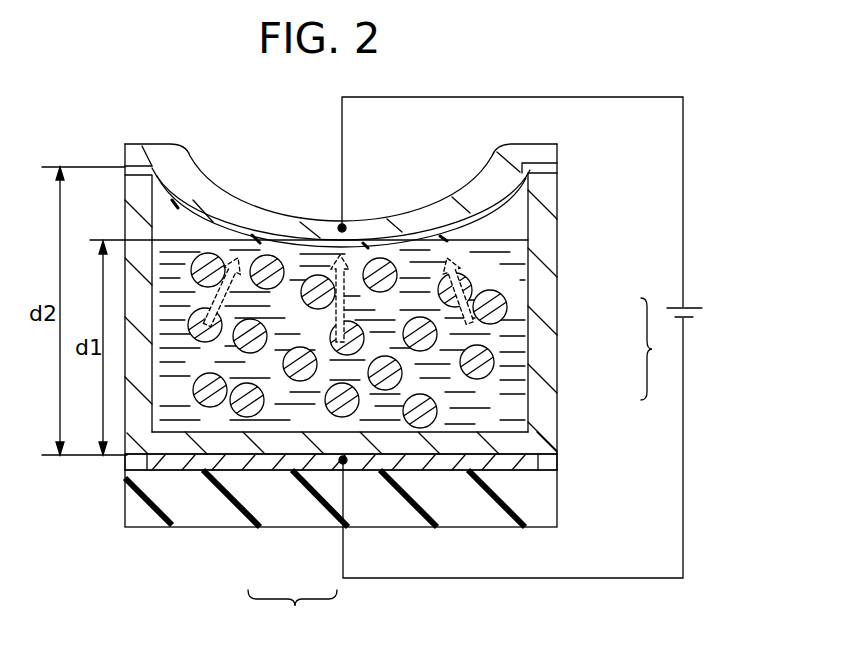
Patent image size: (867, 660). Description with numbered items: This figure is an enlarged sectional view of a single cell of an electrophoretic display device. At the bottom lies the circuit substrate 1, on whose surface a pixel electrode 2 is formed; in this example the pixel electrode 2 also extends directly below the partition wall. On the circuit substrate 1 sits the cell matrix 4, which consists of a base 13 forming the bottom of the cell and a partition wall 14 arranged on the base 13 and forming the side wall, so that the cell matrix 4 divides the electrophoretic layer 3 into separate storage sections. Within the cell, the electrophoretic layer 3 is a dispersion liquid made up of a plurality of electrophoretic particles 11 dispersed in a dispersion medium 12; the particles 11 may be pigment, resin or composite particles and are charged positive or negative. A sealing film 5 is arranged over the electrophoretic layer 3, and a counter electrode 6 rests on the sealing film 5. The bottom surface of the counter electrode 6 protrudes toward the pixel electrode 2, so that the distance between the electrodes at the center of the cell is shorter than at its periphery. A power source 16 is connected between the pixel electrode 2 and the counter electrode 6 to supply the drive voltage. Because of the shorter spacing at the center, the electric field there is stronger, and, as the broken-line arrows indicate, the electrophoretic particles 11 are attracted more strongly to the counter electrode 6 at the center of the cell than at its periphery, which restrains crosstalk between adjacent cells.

The circuit substrate 1 is at (207, 510).
The pixel electrode 2 is at (168, 466).
The electrophoretic layer 3 is at (304, 633).
The cell matrix 4 is at (673, 365).
The sealing film 5 is at (384, 243).
The counter electrode 6 is at (432, 215).
The electrophoretic particles 11 is at (333, 415).
The dispersion medium 12 is at (273, 393).
The base 13 is at (466, 442).
The partition wall 14 is at (543, 317).
The power source 16 is at (692, 303).